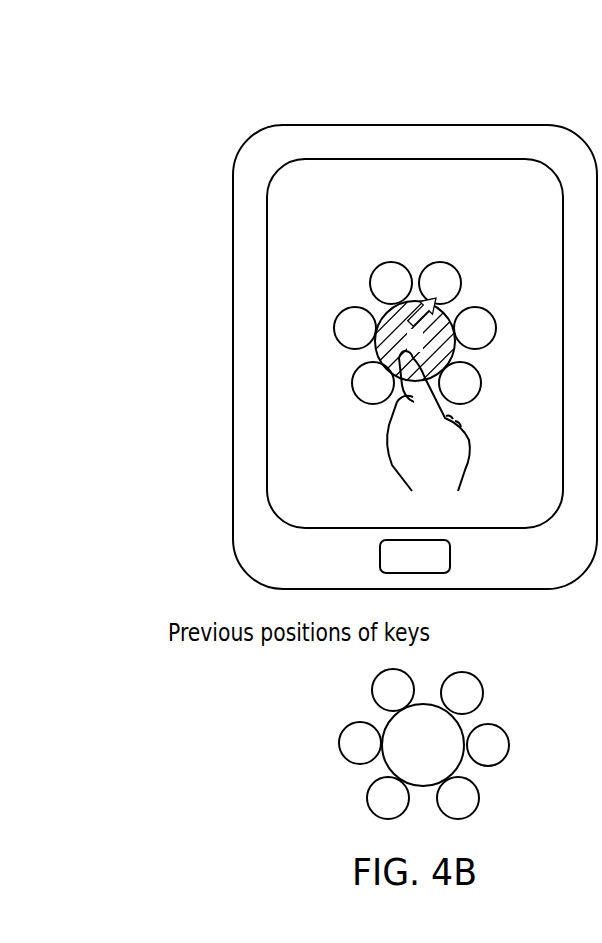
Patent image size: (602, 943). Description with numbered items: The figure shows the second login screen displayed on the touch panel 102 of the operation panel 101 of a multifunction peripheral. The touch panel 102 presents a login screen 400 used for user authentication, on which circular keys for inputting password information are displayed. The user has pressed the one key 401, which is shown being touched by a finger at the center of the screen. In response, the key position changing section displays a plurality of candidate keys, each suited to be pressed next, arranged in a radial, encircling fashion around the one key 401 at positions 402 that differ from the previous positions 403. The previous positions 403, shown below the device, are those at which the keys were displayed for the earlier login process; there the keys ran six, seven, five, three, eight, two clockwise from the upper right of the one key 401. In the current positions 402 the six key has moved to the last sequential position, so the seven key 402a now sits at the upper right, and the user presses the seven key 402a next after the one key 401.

The operation panel 101 is at (329, 122).
The touch panel 102 is at (267, 242).
The login screen 400 is at (295, 385).
The "1" key 401 is at (384, 309).
The positions (of the keys) 402 is at (338, 263).
The "7" key 402a is at (436, 287).
The previous positions 403 is at (330, 665).